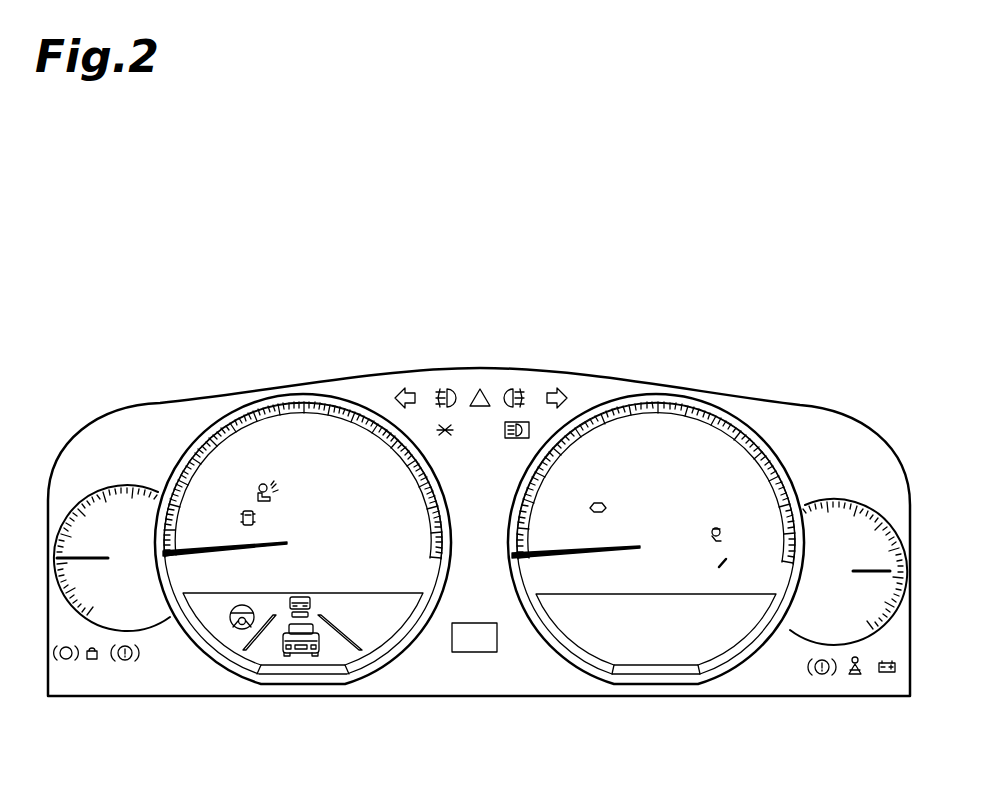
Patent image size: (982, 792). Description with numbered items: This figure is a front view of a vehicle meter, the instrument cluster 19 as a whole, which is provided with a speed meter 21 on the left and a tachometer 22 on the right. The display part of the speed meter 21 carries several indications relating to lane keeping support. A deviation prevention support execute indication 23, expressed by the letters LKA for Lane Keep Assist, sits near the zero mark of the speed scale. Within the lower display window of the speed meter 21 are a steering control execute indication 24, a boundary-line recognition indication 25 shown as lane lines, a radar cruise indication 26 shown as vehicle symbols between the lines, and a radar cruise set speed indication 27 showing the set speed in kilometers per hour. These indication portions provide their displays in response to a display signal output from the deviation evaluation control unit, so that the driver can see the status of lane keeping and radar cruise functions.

The combination meter 19 is at (755, 258).
The speed meter 21 is at (317, 410).
The tachometer 22 is at (745, 432).
The deviation prevention support execute indication 23 is at (219, 562).
The steering control execute indication 24 is at (242, 629).
The boundary-line recognition indication 25 is at (350, 650).
The radar cruise indication 26 is at (300, 656).
The radar cruise set speed indication 27 is at (377, 617).